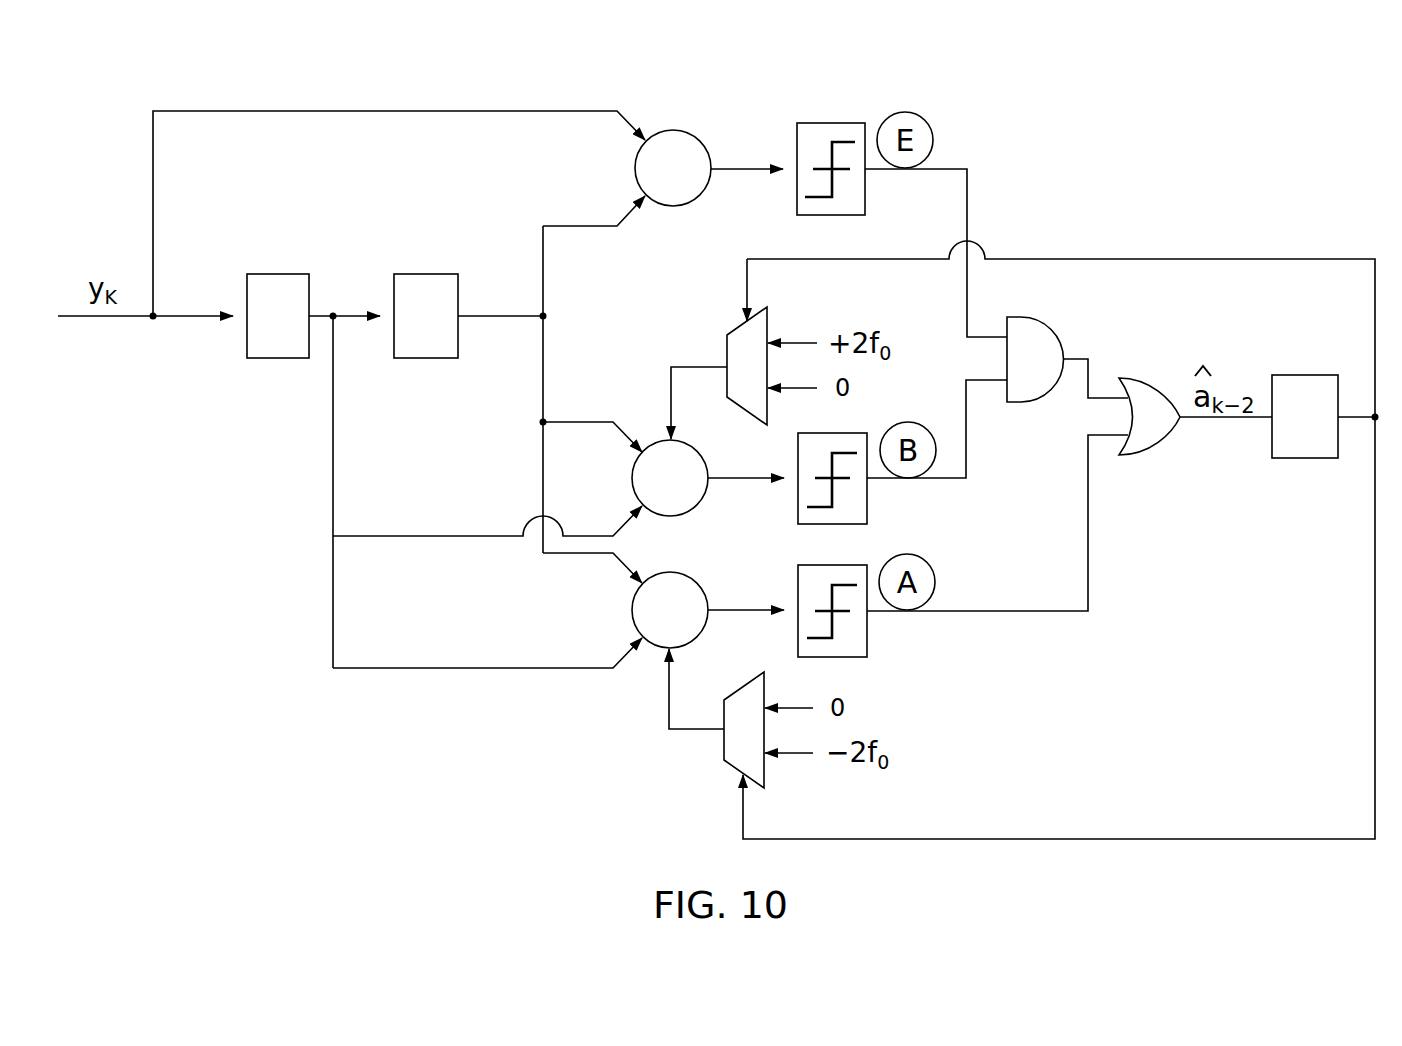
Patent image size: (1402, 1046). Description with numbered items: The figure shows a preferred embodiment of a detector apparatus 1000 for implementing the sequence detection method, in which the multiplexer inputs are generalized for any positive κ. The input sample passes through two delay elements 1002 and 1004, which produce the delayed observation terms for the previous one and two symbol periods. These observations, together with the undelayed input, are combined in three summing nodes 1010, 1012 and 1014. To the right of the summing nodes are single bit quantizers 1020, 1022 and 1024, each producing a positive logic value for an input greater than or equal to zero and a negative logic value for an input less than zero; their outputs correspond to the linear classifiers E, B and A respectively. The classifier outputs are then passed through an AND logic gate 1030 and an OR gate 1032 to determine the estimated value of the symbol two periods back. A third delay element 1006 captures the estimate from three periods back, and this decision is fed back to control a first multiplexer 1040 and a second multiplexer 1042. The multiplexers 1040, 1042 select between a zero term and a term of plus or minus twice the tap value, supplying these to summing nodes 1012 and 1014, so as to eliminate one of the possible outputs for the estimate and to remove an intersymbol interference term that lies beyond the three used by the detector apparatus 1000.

The detector apparatus 1000 is at (1125, 141).
The delay element 1002 is at (278, 273).
The delay element 1004 is at (425, 273).
The third delay element 1006 is at (1305, 374).
The summing node 1010 is at (700, 141).
The summing node 1012 is at (697, 506).
The summing node 1014 is at (632, 610).
The single bit quantizer 1020 is at (830, 122).
The single bit quantizer 1022 is at (867, 508).
The single bit quantizer 1024 is at (867, 642).
The AND logic gate 1030 is at (1050, 327).
The OR gate 1032 is at (1160, 445).
The first multiplexer 1040 is at (727, 340).
The second multiplexer 1042 is at (725, 753).